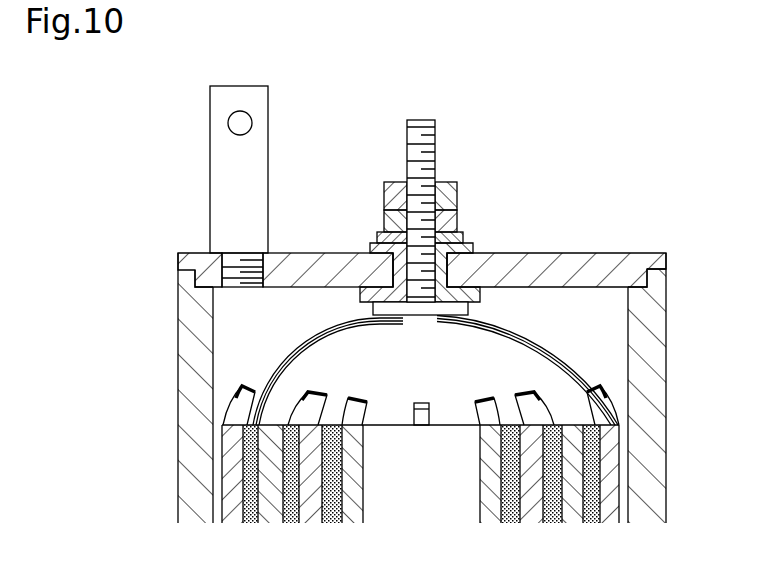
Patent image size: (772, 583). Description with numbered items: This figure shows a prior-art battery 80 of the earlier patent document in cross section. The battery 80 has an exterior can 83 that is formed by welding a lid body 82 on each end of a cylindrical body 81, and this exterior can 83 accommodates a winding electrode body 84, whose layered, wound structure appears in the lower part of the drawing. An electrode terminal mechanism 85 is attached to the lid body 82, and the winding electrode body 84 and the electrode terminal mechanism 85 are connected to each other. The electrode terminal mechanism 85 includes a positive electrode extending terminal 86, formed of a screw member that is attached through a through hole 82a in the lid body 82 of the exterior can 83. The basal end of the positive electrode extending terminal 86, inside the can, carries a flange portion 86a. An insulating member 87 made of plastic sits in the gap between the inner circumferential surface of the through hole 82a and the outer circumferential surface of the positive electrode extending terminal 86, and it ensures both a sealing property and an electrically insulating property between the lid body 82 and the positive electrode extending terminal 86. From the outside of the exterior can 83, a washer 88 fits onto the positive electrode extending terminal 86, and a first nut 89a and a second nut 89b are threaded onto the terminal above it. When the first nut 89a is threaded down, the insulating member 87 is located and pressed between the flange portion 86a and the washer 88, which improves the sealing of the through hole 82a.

The battery 80 is at (705, 192).
The cylindrical body 81 is at (667, 372).
The lid body 82 is at (626, 252).
The through hole 82a is at (452, 262).
The exterior can 83 is at (693, 321).
The winding electrode body 84 is at (632, 448).
The electrode terminal mechanism 85 is at (481, 174).
The positive electrode extending terminal 86 is at (437, 128).
The flange portion 86a is at (471, 305).
The insulating member 87 is at (470, 242).
The washer 88 is at (378, 234).
The first nut 89a is at (383, 208).
The second nut 89b is at (383, 186).